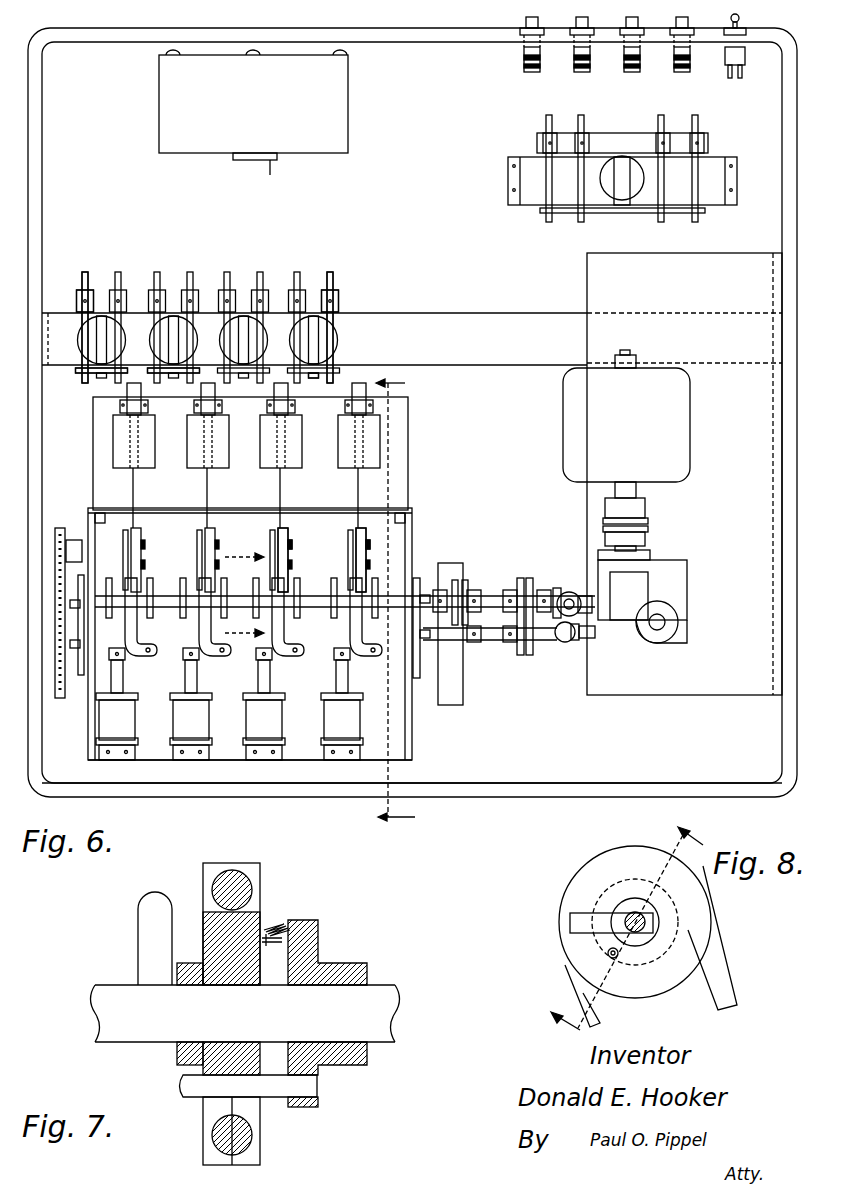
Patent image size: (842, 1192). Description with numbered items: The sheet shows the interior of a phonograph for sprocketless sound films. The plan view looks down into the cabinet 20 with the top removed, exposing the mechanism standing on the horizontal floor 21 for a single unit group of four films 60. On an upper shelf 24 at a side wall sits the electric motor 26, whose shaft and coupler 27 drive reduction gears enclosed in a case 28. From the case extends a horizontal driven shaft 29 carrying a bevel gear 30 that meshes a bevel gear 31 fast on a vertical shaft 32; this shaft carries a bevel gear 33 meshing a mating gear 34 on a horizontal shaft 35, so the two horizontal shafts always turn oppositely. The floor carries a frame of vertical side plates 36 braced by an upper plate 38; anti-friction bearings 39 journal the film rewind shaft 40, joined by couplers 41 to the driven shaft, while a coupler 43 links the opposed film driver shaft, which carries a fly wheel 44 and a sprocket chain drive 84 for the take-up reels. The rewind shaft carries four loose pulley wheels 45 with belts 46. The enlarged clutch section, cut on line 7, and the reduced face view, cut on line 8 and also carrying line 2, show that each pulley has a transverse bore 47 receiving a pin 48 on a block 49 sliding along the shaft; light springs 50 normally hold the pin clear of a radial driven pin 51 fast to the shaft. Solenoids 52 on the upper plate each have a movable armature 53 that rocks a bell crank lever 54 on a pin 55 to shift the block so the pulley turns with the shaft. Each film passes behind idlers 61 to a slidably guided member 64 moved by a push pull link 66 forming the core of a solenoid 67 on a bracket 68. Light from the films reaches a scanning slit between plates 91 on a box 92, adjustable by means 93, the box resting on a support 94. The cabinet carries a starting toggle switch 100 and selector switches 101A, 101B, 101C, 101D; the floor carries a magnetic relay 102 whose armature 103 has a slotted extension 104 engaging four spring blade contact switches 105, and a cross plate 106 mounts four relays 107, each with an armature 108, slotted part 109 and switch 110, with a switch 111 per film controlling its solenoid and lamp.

In FIG. 6, the cabinet 20 is at (782, 234).
In FIG. 6, the horizontal floor 21 is at (550, 765).
In FIG. 6, the upper shelf 24 is at (587, 271).
In FIG. 6, the electric motor 26 is at (574, 385).
In FIG. 6, the shaft and coupler 27 is at (632, 510).
In FIG. 6, the case 28 is at (662, 585).
In FIG. 6, the horizontal driven shaft 29 is at (580, 596).
In FIG. 6, the bevel gear 30 is at (556, 588).
In FIG. 6, the bevel gear 31 is at (566, 592).
In FIG. 6, the vertical shaft 32 is at (578, 636).
In FIG. 6, the bevel gear 33 is at (582, 640).
In FIG. 6, the mating gear 34 is at (560, 642).
In FIG. 6, the horizontal shaft 35 is at (490, 640).
In FIG. 6, the side plates 36 is at (415, 522).
In FIG. 6, the upper plate 38 is at (412, 746).
In FIG. 6, the anti-friction bearings 39 is at (80, 690).
In FIG. 6, the film rewind shaft 40 is at (180, 606).
In FIG. 7, the film rewind shaft 40 is at (380, 990).
In FIG. 8, the film rewind shaft 40 is at (648, 912).
In FIG. 6, the couplers 41 is at (505, 588).
In FIG. 6, the coupler 43 is at (522, 656).
In FIG. 6, the fly wheel 44 is at (494, 556).
In FIG. 6, the pulley wheels 45 is at (300, 626).
In FIG. 7, the pulley wheels 45 is at (268, 936).
In FIG. 8, the pulley wheels 45 is at (574, 892).
In FIG. 6, the belt 46 is at (130, 568).
In FIG. 7, the belt 46 is at (232, 870).
In FIG. 8, the belt 46 is at (730, 987).
In FIG. 7, the transverse bore 47 is at (262, 1100).
In FIG. 7, the pin 48 is at (300, 1088).
In FIG. 7, the block 49 is at (335, 966).
In FIG. 7, the light springs 50 is at (275, 925).
In FIG. 6, the radial driven pin 51 is at (286, 582).
In FIG. 7, the radial driven pin 51 is at (150, 915).
In FIG. 8, the radial driven pin 51 is at (568, 923).
In FIG. 6, the solenoids 52 is at (123, 730).
In FIG. 6, the movable armature 53 is at (258, 686).
In FIG. 6, the bell crank lever 54 is at (222, 652).
In FIG. 6, the pin 55 is at (215, 662).
In FIG. 6, the films 60 is at (294, 558).
In FIG. 6, the idlers 61 is at (370, 532).
In FIG. 6, the slidably guided member 64 is at (203, 565).
In FIG. 6, the push pull link 66 is at (380, 468).
In FIG. 6, the solenoid 67 is at (226, 468).
In FIG. 6, the bracket 68 is at (405, 398).
In FIG. 6, the sprocket chain drive 84 is at (60, 528).
In FIG. 6, the plates 91 is at (245, 160).
In FIG. 6, the box 92 is at (170, 87).
In FIG. 6, the adjustment means 93 is at (270, 162).
In FIG. 6, the support 94 is at (162, 53).
In FIG. 6, the starting toggle switch 100 is at (745, 62).
In FIG. 6, the push button selector switch 101A is at (700, 60).
In FIG. 6, the push button selector switch 101B is at (645, 62).
In FIG. 6, the push button selector switch 101C is at (598, 60).
In FIG. 6, the push button selector switch 101D is at (524, 59).
In FIG. 6, the magnetic relay 102 is at (612, 172).
In FIG. 6, the armature 103 is at (620, 165).
In FIG. 6, the slotted extension 104 is at (540, 210).
In FIG. 6, the spring blade contact switches 105 is at (694, 222).
In FIG. 6, the cross plate 106 is at (432, 316).
In FIG. 6, the electromagnetic relays 107 is at (100, 318).
In FIG. 6, the armature 108 is at (110, 300).
In FIG. 6, the slotted upstanding part 109 is at (318, 374).
In FIG. 6, the spring blade contact switch 110 is at (118, 290).
In FIG. 6, the switch 111 is at (96, 372).
In FIG. 6, the section line 2 is at (407, 601).
In FIG. 8, the section line 7 is at (620, 919).
In FIG. 6, the section line 8 is at (237, 596).